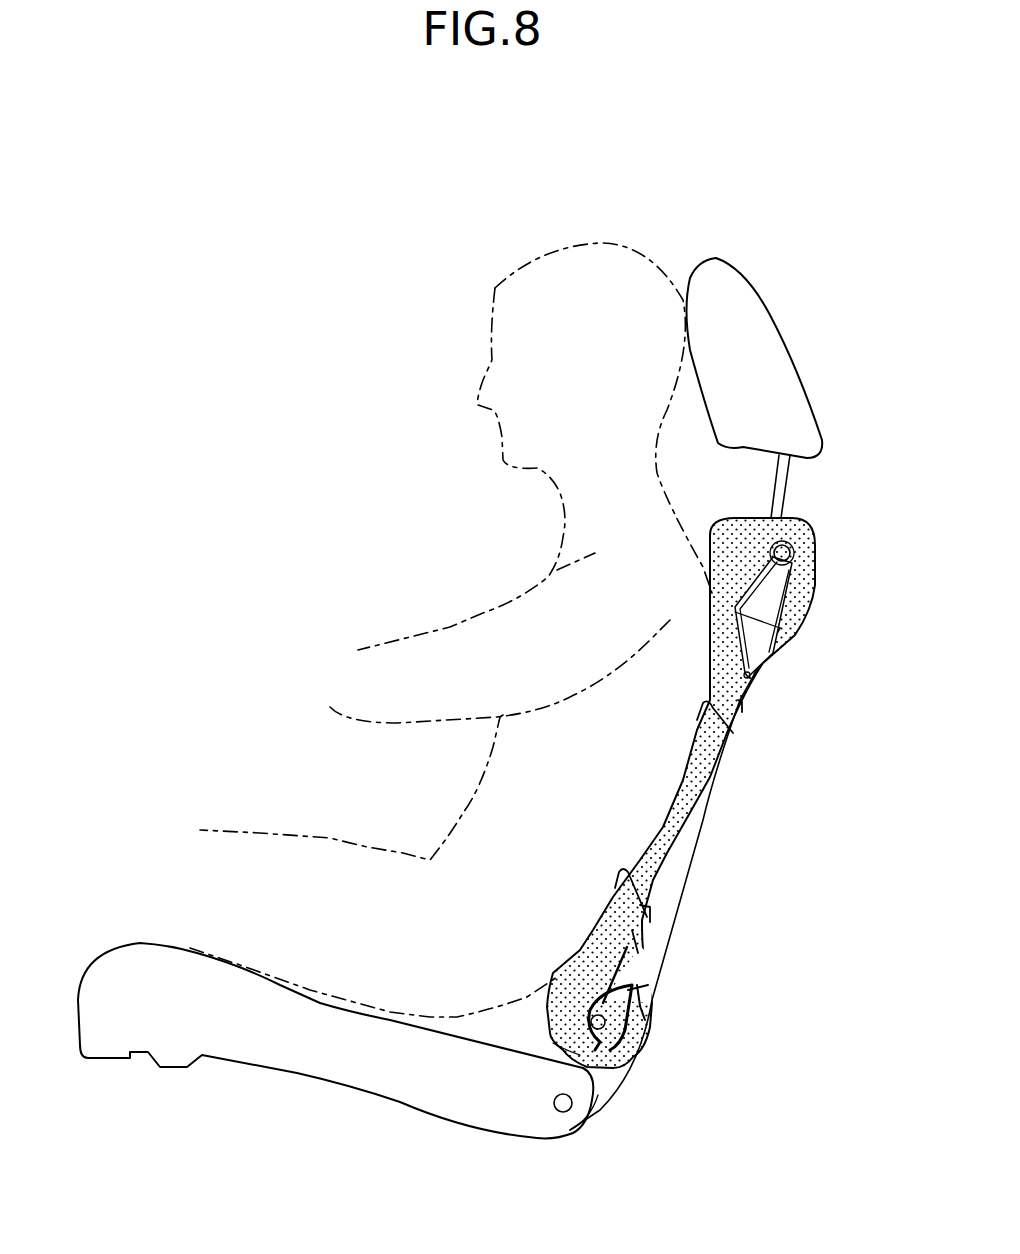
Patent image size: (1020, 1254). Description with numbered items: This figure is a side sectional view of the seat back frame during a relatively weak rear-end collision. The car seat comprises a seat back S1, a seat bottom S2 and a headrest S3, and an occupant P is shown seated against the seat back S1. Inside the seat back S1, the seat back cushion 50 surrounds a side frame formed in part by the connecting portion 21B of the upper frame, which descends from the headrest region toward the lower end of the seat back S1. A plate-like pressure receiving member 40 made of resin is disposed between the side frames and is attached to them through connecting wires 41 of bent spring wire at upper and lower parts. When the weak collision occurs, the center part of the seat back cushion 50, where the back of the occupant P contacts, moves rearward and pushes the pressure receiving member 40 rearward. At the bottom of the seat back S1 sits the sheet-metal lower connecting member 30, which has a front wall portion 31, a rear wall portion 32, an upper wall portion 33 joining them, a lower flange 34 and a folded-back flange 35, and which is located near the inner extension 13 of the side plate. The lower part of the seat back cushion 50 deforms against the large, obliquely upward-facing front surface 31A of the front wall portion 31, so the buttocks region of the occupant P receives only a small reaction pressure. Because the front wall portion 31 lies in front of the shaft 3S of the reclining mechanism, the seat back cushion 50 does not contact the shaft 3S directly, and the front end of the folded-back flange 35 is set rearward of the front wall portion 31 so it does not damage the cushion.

The occupant P is at (635, 250).
The headrest S3 is at (763, 307).
The seat back S1 is at (645, 808).
The seat bottom S2 is at (297, 1073).
The seat back cushion 50 is at (712, 548).
The connecting portion 21B is at (770, 590).
The pressure receiving member 40 is at (680, 862).
The connecting wire 41 is at (735, 715).
The lower connecting member 30 is at (559, 1020).
The front surface 31A is at (593, 1007).
The front wall portion 31 is at (589, 1025).
The rear wall portion 32 is at (636, 1027).
The upper wall portion 33 is at (640, 985).
The inner extension 13 is at (635, 988).
The lower flange 34 is at (553, 1043).
The folded-back flange 35 is at (601, 1068).
The shaft 3S is at (603, 1030).